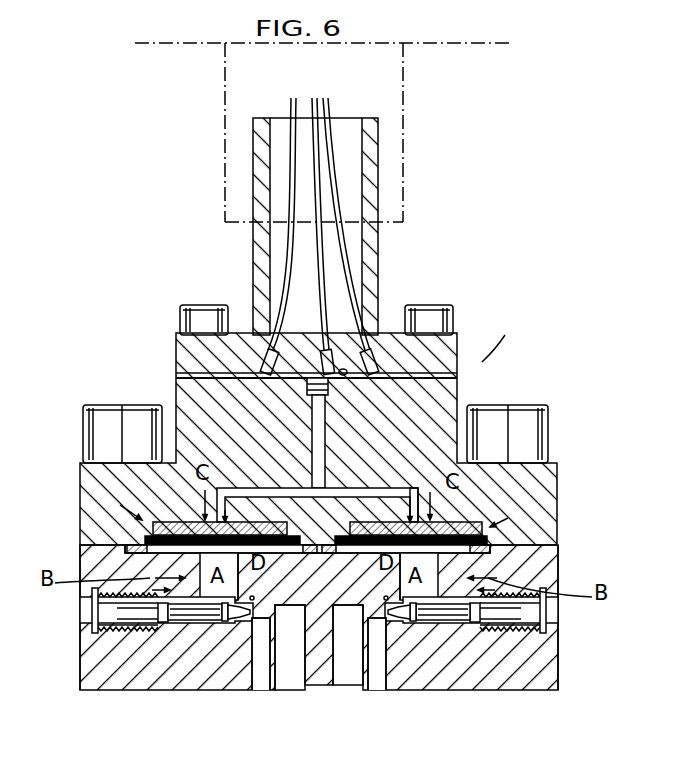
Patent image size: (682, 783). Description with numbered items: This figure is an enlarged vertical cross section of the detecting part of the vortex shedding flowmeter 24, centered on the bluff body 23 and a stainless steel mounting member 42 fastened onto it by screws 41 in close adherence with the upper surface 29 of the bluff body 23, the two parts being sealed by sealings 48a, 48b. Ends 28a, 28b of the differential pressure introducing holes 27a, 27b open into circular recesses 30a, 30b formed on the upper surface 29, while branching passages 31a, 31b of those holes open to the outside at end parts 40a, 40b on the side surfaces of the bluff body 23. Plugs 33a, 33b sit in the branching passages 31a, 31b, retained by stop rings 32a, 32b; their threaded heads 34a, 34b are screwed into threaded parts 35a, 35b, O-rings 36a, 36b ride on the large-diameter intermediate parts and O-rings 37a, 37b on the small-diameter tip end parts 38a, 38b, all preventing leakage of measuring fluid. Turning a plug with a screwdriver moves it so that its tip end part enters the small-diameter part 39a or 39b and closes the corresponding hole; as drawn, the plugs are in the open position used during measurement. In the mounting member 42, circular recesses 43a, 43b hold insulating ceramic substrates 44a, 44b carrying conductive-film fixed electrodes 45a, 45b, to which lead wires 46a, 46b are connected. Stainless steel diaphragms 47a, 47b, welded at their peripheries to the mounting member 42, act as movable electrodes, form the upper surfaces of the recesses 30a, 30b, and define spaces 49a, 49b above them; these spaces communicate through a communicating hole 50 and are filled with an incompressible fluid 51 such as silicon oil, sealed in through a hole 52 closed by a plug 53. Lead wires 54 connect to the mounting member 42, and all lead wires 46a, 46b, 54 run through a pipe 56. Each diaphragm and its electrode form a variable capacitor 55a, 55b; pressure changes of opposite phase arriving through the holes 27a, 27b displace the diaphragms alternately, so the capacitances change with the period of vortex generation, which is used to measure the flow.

The pipe 56 is at (255, 170).
The mounting member 42 is at (556, 470).
The screws 41 is at (103, 413).
The ceramic substrate 44b is at (128, 440).
The ceramic substrate 44a is at (505, 440).
The flow control valve 24 is at (482, 362).
The lead wire 46b is at (290, 248).
The lead wires 54 is at (322, 270).
The lead wire 46a is at (345, 250).
The plug 53 is at (320, 371).
The hole 52 is at (324, 412).
The incompressible fluid 51 is at (317, 507).
The communicating hole 50 is at (416, 490).
The fixed electrode 45b is at (245, 520).
The fixed electrode 45a is at (365, 520).
The space 49b is at (275, 536).
The space 49a is at (392, 536).
The sealing 48b is at (150, 540).
The sealing 48a is at (490, 545).
The variable capacitor 55b is at (138, 520).
The variable capacitor 55a is at (500, 520).
The upper surface 29 is at (545, 537).
The circular recess 30b is at (127, 548).
The circular recess 30a is at (492, 550).
The end 28b is at (165, 553).
The end 28a is at (473, 553).
The bluff body 23 is at (560, 655).
The differential pressure introducing hole 27b is at (284, 690).
The differential pressure introducing hole 27a is at (340, 688).
The diaphragm 47b is at (282, 553).
The diaphragm 47a is at (355, 553).
The small-diameter part 39b is at (261, 620).
The small-diameter part 39a is at (377, 620).
The stop ring 32b is at (100, 598).
The end part 40b is at (93, 612).
The head 34b is at (100, 633).
The threaded part 35b is at (124, 632).
The plug 33b is at (163, 623).
The branching passage 31b is at (190, 620).
The O-ring 36b is at (224, 621).
The O-ring 37b is at (238, 620).
The tip end part 38b is at (250, 600).
The stop ring 32a is at (540, 598).
The end part 40a is at (546, 615).
The head 34a is at (538, 633).
The threaded part 35a is at (512, 632).
The plug 33a is at (475, 623).
The branching passage 31a is at (445, 620).
The O-ring 36a is at (414, 621).
The O-ring 37a is at (400, 620).
The tip end part 38a is at (388, 600).
The circular recess 43b is at (127, 485).
The circular recess 43a is at (502, 485).